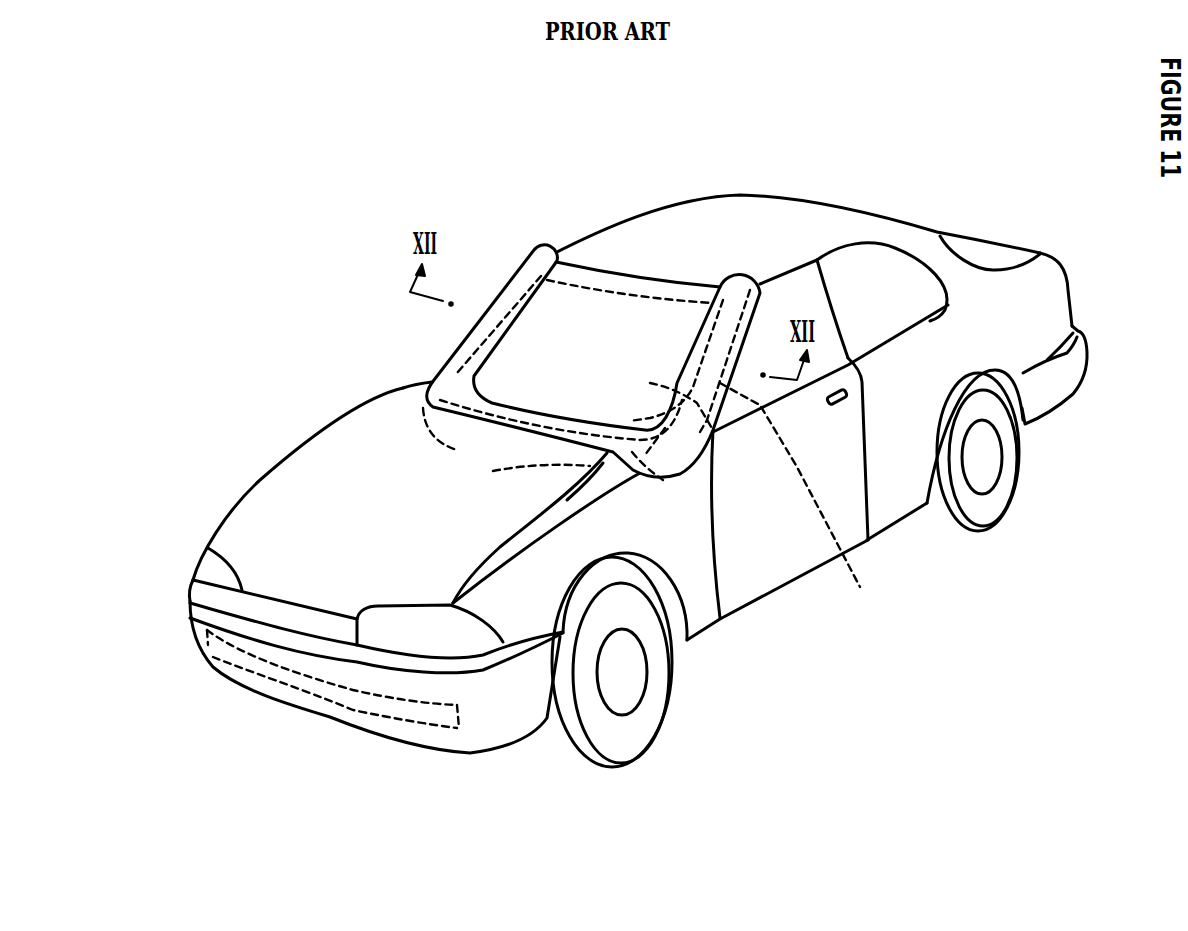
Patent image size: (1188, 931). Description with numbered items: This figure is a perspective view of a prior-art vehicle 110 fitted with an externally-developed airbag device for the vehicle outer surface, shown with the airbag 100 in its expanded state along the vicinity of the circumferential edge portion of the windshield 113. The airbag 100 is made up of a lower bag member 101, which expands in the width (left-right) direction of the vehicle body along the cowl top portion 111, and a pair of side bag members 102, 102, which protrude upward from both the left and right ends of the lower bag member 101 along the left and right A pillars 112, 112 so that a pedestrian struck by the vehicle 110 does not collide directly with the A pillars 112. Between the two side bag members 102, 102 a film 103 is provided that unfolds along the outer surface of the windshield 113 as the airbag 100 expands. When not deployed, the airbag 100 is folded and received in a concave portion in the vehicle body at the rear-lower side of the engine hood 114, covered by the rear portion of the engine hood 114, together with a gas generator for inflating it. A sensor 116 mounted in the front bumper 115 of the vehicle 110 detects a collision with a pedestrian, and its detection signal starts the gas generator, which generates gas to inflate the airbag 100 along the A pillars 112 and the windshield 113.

The airbag 100 is at (545, 249).
The lower bag member 101 is at (431, 378).
The side bag members 102 is at (521, 263).
The film 103 is at (520, 328).
The vehicle 110 is at (876, 201).
The cowl top portion 111 is at (663, 480).
The A pillars 112 is at (457, 348).
The windshield 113 is at (724, 440).
The engine hood 114 is at (267, 500).
The front bumper 115 is at (273, 697).
The sensor 116 is at (382, 722).